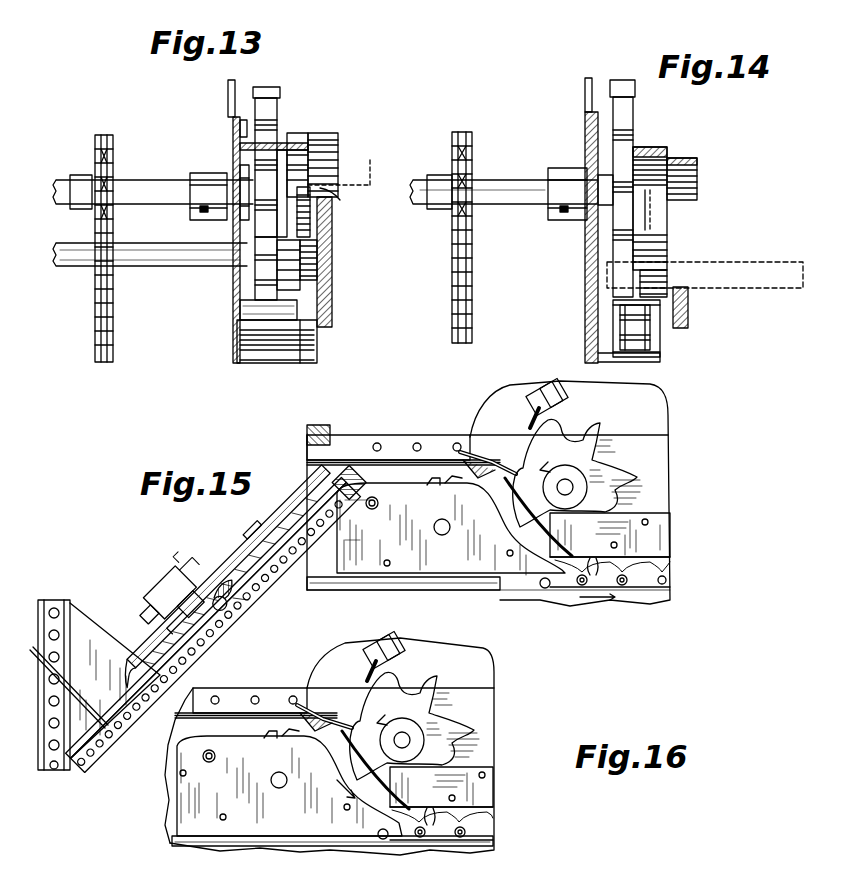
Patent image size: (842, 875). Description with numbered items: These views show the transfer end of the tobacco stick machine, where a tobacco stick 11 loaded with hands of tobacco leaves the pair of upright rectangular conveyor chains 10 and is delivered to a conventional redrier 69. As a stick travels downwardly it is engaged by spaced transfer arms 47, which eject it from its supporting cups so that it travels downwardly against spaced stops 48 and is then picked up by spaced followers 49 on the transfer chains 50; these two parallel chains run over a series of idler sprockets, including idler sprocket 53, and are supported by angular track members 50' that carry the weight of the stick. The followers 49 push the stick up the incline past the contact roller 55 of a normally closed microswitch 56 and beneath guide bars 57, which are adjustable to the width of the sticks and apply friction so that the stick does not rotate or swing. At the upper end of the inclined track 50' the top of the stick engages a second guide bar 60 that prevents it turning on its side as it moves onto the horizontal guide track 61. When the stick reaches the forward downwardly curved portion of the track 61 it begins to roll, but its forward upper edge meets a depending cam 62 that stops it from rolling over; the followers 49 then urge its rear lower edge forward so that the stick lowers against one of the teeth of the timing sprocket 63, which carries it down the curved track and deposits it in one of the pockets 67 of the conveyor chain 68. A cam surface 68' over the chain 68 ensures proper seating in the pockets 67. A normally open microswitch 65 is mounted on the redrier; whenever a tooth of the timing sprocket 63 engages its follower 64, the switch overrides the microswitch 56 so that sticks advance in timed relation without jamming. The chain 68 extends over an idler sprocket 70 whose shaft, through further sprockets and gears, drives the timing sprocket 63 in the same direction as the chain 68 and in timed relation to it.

In FIG. 15, the conveyor chains 10 is at (62, 602).
In FIG. 13, the tobacco stick 11 is at (372, 162).
In FIG. 14, the tobacco stick 11 is at (728, 263).
In FIG. 15, the tobacco stick 11 is at (240, 601).
In FIG. 16, the tobacco stick 11 is at (292, 741).
In FIG. 15, the transfer arms 47 is at (72, 683).
In FIG. 15, the stops 48 is at (122, 712).
In FIG. 15, the followers 49 is at (225, 640).
In FIG. 16, the followers 49 is at (269, 741).
In FIG. 13, the transfer chains 50 is at (299, 341).
In FIG. 15, the transfer chains 50 is at (215, 617).
In FIG. 13, the angular track members 50' is at (277, 378).
In FIG. 15, the angular track members 50' is at (482, 523).
In FIG. 13, the idler sprocket 53 is at (325, 227).
In FIG. 15, the contact roller 55 is at (192, 608).
In FIG. 15, the microswitch 56 is at (168, 590).
In FIG. 15, the guide bars 57 is at (266, 548).
In FIG. 13, the second guide bar 60 is at (297, 146).
In FIG. 14, the second guide bar 60 is at (668, 152).
In FIG. 15, the second guide bar 60 is at (425, 460).
In FIG. 16, the second guide bar 60 is at (242, 713).
In FIG. 13, the guide track 61 is at (342, 195).
In FIG. 14, the guide track 61 is at (690, 288).
In FIG. 15, the guide track 61 is at (388, 484).
In FIG. 16, the guide track 61 is at (230, 737).
In FIG. 13, the depending cam 62 is at (338, 150).
In FIG. 14, the depending cam 62 is at (698, 188).
In FIG. 15, the depending cam 62 is at (482, 459).
In FIG. 16, the depending cam 62 is at (333, 704).
In FIG. 13, the timing sprocket 63 is at (278, 111).
In FIG. 14, the timing sprocket 63 is at (634, 124).
In FIG. 15, the timing sprocket 63 is at (594, 430).
In FIG. 16, the timing sprocket 63 is at (431, 683).
In FIG. 13, the follower 64 is at (277, 90).
In FIG. 14, the follower 64 is at (620, 85).
In FIG. 15, the follower 64 is at (528, 424).
In FIG. 16, the follower 64 is at (365, 677).
In FIG. 15, the microswitch 65 is at (548, 387).
In FIG. 16, the microswitch 65 is at (385, 640).
In FIG. 15, the pockets 67 is at (604, 545).
In FIG. 16, the pockets 67 is at (441, 811).
In FIG. 14, the conveyor chain 68 is at (666, 328).
In FIG. 15, the conveyor chain 68 is at (632, 578).
In FIG. 16, the conveyor chain 68 is at (449, 810).
In FIG. 14, the cam surface 68' is at (672, 267).
In FIG. 15, the cam surface 68' is at (639, 522).
In FIG. 16, the cam surface 68' is at (477, 787).
In FIG. 13, the redrier 69 is at (118, 142).
In FIG. 14, the redrier 69 is at (476, 147).
In FIG. 13, the idler sprocket 70 is at (118, 228).
In FIG. 14, the idler sprocket 70 is at (478, 240).